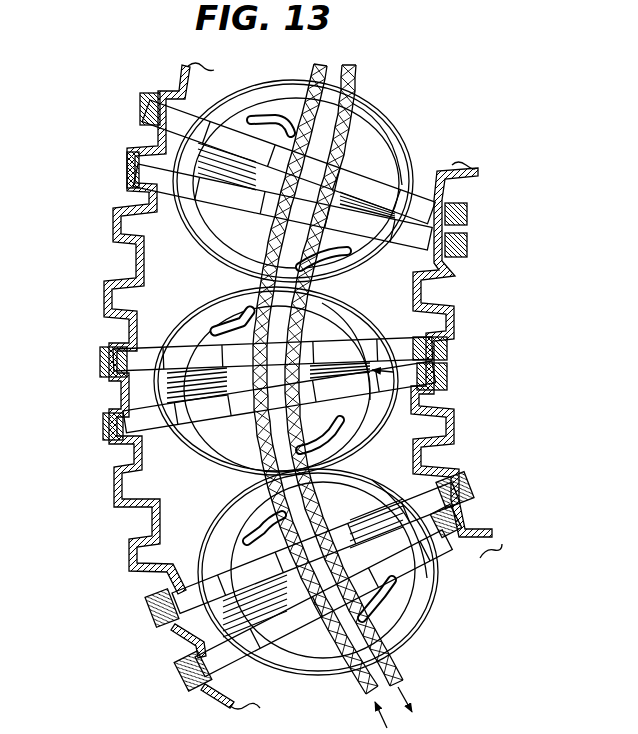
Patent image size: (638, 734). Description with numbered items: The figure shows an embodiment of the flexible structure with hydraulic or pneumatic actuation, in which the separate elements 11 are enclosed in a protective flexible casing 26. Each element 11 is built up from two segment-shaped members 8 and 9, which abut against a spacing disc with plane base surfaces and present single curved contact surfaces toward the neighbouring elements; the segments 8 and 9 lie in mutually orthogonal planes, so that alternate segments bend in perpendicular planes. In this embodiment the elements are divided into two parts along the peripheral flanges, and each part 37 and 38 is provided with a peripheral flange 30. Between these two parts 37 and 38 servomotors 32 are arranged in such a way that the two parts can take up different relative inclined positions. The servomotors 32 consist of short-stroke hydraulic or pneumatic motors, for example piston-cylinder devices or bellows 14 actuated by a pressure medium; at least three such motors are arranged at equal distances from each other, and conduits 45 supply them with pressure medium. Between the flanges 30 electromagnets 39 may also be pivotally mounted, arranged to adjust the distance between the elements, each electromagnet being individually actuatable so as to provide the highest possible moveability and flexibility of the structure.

The segment-shaped member 8 is at (190, 320).
The segment-shaped member 9 is at (205, 452).
The element 11 is at (321, 178).
The bellows spring 14 is at (196, 150).
The protective flexible casing 26 is at (112, 296).
The peripheral flange 30 is at (156, 100).
The servomotor 32 is at (167, 386).
The part 37 is at (370, 140).
The part 38 is at (367, 250).
The electromagnet 39 is at (198, 172).
The conduit 45 is at (395, 663).